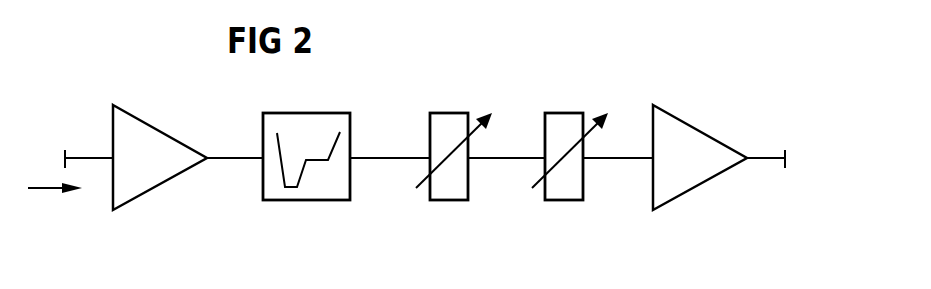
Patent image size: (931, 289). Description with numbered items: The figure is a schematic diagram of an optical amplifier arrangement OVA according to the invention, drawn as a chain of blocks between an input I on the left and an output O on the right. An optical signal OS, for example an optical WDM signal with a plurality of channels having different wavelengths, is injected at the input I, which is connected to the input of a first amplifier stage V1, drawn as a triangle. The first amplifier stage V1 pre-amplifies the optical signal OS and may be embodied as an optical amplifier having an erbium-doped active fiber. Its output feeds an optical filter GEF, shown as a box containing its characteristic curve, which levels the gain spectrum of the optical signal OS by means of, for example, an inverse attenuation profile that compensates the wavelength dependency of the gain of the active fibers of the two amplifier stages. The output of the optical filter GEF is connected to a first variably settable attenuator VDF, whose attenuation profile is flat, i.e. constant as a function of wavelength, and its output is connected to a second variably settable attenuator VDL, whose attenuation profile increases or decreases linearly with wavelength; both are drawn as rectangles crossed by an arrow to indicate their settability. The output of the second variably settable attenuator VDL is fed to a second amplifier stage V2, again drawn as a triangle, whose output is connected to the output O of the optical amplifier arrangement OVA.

The input I is at (56, 159).
The output O is at (798, 159).
The optical signal OS is at (40, 189).
The first amplifier stage V1 is at (160, 187).
The optical filter GEF is at (306, 200).
The first variably settable attenuator VDF is at (450, 113).
The second variably settable attenuator VDL is at (593, 92).
The optical amplifier arrangement OVA is at (519, 163).
The second amplifier stage V2 is at (698, 185).